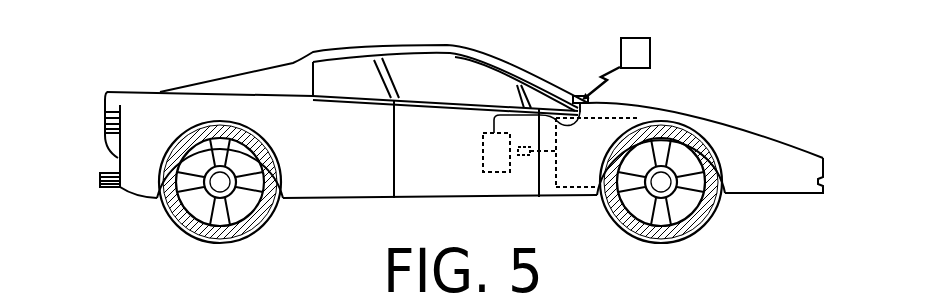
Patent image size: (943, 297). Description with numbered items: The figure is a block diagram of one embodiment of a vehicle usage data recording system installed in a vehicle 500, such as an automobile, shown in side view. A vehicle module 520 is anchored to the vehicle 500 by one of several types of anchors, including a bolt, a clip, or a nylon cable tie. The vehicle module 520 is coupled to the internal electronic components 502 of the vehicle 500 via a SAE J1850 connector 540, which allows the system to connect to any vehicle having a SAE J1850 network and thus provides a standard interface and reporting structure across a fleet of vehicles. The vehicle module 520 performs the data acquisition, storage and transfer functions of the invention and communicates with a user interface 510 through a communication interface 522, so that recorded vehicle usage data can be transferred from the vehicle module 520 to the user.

The vehicle 500 is at (297, 54).
The internal electronic components 502 is at (626, 118).
The user interface 510 is at (633, 37).
The vehicle module 520 is at (495, 173).
The communication interface 522 is at (581, 95).
The SAE J1850 connector 540 is at (523, 157).